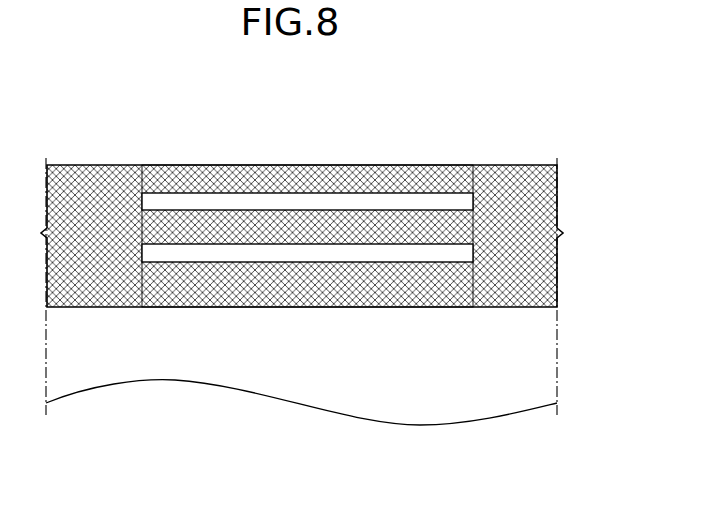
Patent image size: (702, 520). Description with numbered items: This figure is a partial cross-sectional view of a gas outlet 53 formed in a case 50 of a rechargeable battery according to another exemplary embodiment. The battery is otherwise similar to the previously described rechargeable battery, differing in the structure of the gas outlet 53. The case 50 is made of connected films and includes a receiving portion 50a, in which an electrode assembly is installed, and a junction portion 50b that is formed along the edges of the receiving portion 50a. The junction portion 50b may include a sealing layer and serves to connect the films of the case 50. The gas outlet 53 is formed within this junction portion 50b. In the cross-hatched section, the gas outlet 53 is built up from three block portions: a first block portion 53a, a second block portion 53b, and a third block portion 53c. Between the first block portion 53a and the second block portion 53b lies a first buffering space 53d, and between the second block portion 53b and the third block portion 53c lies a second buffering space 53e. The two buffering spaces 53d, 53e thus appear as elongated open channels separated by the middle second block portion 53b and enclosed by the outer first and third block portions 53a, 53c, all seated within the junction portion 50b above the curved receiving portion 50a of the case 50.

The case 50 is at (155, 165).
The receiving portion 50a is at (490, 398).
The junction portion 50b is at (83, 178).
The gas outlet 53 is at (322, 226).
The first block portion 53a is at (300, 285).
The second block portion 53b is at (217, 236).
The third block portion 53c is at (278, 178).
The first buffering space 53d is at (400, 258).
The second buffering space 53e is at (377, 202).